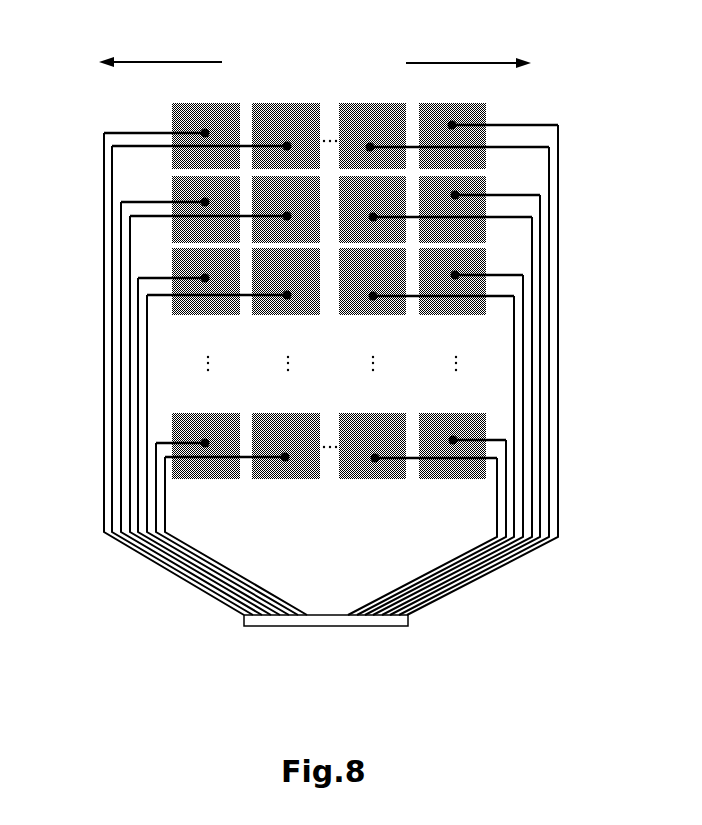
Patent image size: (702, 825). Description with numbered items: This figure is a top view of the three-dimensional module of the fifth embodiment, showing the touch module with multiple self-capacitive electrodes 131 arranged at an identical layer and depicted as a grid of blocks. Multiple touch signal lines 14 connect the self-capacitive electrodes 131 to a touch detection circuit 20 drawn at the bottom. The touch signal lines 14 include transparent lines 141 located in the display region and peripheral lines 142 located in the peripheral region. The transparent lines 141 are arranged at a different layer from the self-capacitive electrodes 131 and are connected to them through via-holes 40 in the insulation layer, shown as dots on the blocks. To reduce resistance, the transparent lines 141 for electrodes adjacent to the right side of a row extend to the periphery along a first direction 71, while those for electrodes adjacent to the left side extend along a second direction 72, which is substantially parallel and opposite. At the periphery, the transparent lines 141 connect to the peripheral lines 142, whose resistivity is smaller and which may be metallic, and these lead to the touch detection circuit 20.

The via-hole 40 is at (238, 112).
The self-capacitive electrode 131 is at (173, 103).
The touch signal line 14 is at (331, 368).
The transparent line 141 is at (242, 459).
The peripheral line 142 is at (203, 552).
The touch detection circuit 20 is at (244, 627).
The first direction 71 is at (485, 64).
The second direction 72 is at (146, 64).